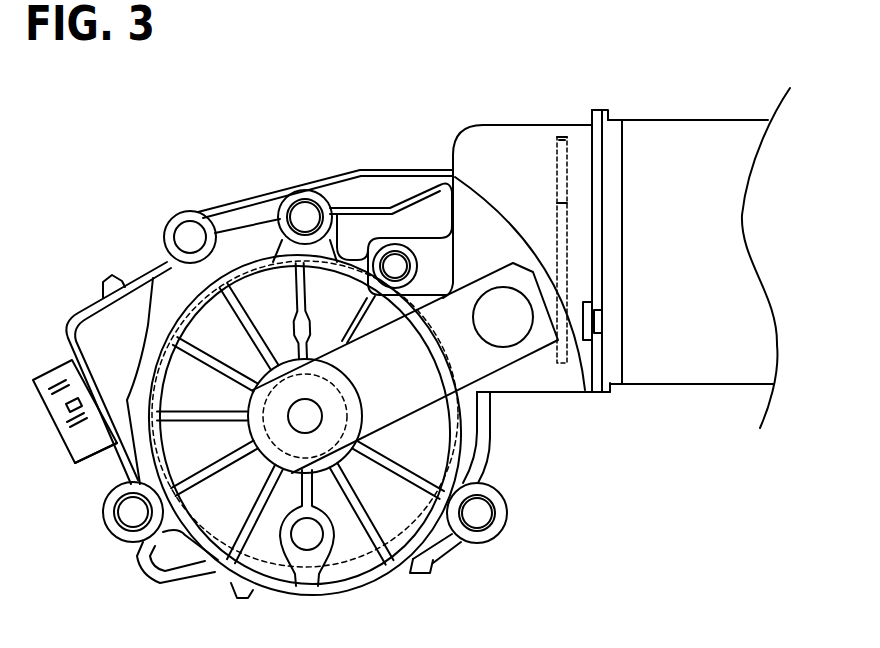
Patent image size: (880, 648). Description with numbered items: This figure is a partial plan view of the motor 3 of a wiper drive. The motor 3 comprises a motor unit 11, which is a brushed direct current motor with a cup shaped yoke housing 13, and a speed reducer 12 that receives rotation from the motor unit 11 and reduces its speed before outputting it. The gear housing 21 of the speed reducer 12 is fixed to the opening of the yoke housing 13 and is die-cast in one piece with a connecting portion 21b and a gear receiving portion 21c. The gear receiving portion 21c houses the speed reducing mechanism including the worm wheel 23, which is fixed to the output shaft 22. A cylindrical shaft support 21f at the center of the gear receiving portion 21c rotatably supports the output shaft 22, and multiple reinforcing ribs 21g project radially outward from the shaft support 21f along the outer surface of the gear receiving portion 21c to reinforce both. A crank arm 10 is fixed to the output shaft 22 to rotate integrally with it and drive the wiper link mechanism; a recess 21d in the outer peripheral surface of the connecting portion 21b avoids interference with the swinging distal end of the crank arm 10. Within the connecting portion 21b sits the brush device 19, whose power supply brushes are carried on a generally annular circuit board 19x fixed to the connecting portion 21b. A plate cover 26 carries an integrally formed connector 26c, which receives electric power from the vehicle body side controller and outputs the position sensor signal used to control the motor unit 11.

The motor 3 is at (191, 129).
The crank arm 10 is at (447, 298).
The motor unit 11 is at (710, 113).
The speed reducer 12 is at (170, 216).
The yoke housing 13 is at (661, 125).
The brush device 19 is at (586, 100).
The circuit board 19x is at (563, 124).
The gear housing 21 is at (403, 572).
The connecting portion 21b is at (558, 384).
The gear receiving portion 21c is at (292, 588).
The recess 21d is at (483, 213).
The shaft support 21f is at (250, 394).
The reinforcing ribs 21g is at (303, 286).
The output shaft 22 is at (322, 413).
The worm wheel 23 is at (287, 257).
The plate cover 26 is at (47, 372).
The connector 26c is at (67, 457).